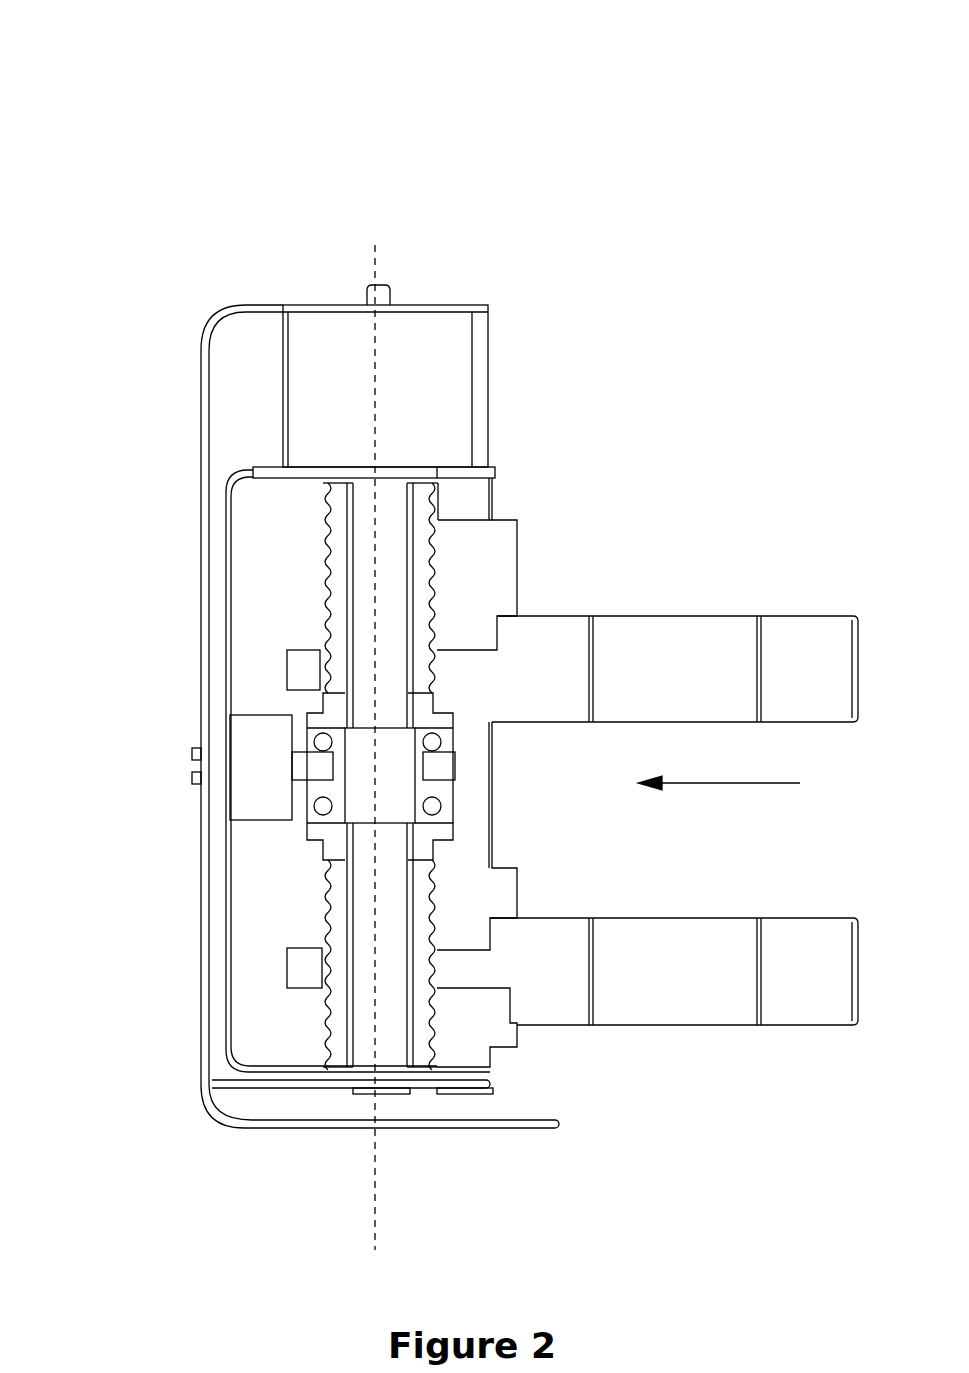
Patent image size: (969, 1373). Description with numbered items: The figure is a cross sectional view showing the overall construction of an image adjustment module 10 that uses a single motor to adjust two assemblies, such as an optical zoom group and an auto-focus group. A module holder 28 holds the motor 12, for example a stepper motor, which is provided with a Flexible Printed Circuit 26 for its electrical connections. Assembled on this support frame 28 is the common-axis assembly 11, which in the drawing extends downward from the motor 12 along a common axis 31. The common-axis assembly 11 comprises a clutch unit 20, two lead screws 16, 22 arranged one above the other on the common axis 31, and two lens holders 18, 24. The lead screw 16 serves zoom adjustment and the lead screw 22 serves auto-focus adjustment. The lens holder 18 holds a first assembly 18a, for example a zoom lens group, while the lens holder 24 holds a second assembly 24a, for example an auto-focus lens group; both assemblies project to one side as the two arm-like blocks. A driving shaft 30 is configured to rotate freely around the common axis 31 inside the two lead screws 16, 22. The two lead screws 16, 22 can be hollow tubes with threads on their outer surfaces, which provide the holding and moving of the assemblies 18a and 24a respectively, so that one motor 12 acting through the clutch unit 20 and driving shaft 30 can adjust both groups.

The image adjustment module 10 is at (587, 145).
The common-axis assembly 11 is at (748, 785).
The motor 12 is at (413, 313).
The lead screw 16 is at (300, 601).
The lens holder 18 is at (261, 657).
The first assembly 18a is at (695, 649).
The clutch unit 20 is at (240, 749).
The lead screw 22 is at (301, 875).
The lens holder 24 is at (260, 952).
The second assembly 24a is at (722, 979).
The Flexible Printed Circuit 26 is at (185, 1082).
The module holder 28 is at (503, 460).
The driving shaft 30 is at (341, 520).
The common axis 31 is at (396, 562).